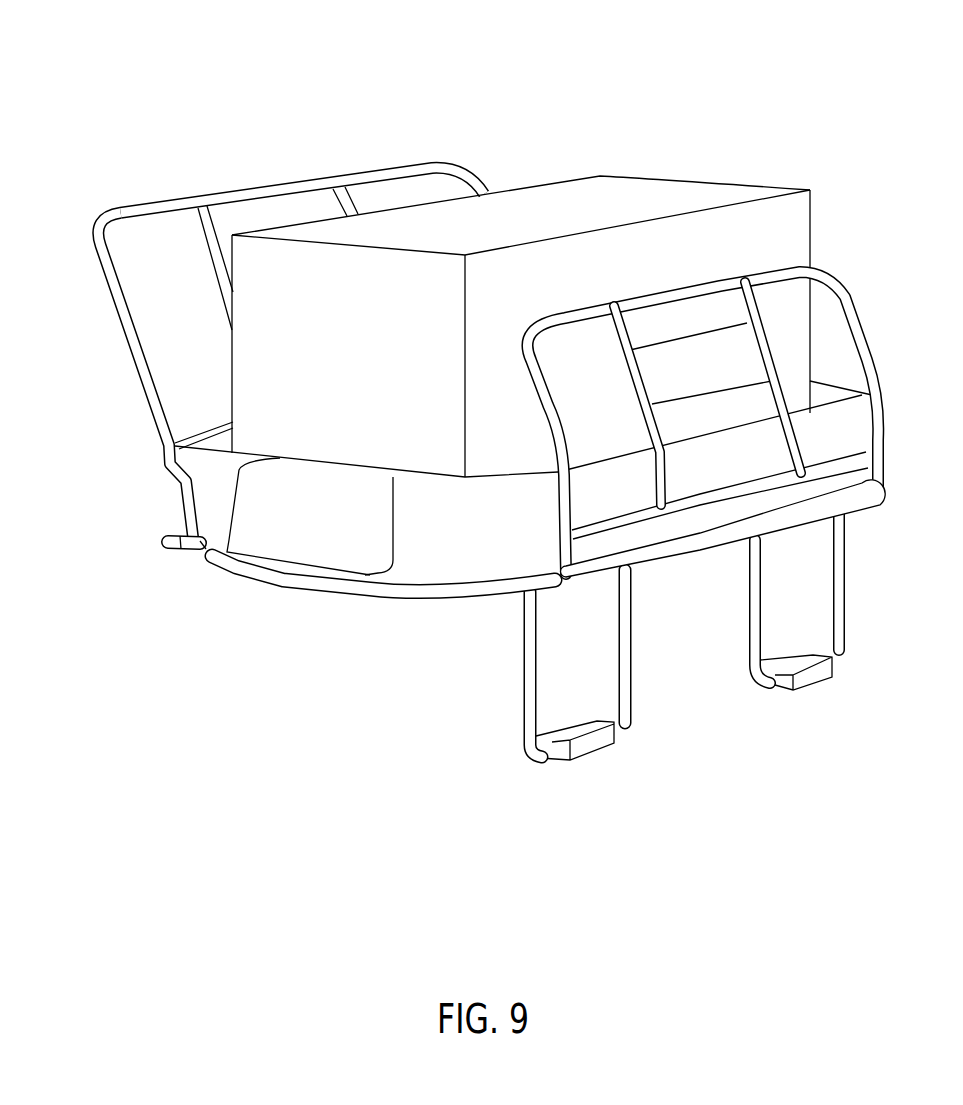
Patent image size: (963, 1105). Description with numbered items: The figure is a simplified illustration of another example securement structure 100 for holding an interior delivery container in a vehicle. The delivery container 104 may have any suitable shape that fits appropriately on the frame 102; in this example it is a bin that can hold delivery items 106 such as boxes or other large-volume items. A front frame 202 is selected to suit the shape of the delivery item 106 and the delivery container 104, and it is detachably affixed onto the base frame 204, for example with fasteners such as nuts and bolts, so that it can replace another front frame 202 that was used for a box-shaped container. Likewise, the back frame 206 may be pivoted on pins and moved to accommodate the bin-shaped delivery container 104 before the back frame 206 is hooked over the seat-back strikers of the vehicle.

The securement structure 100 is at (466, 403).
The frame 102 is at (390, 167).
The delivery container 104 is at (475, 535).
The delivery items 106 is at (667, 181).
The front frame 202 is at (702, 507).
The base frame 204 is at (352, 588).
The back frame 206 is at (130, 380).